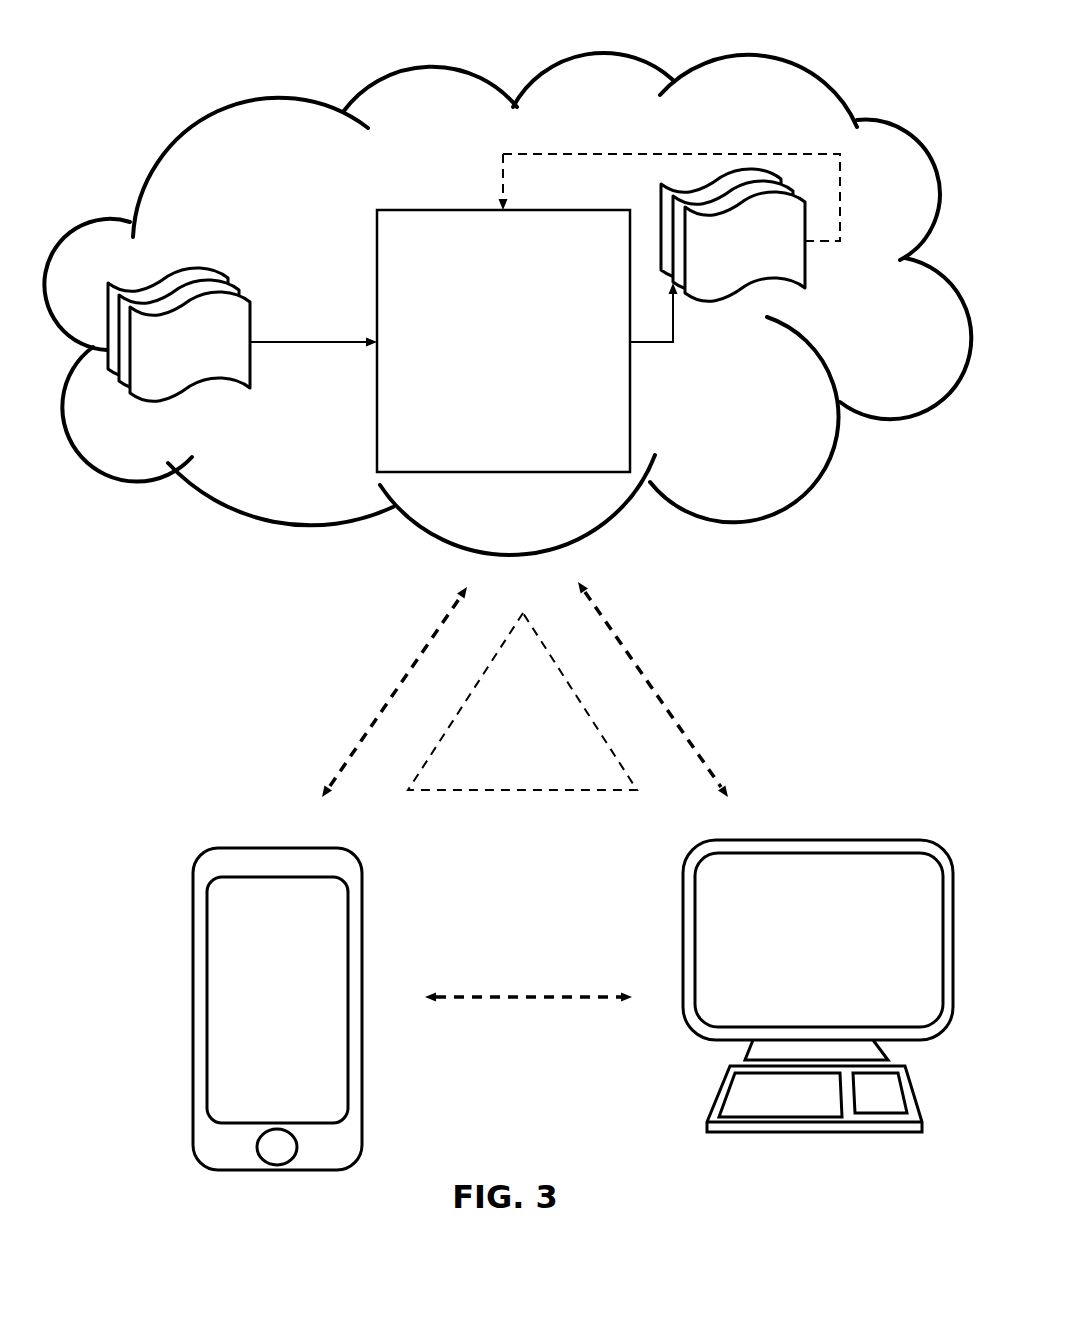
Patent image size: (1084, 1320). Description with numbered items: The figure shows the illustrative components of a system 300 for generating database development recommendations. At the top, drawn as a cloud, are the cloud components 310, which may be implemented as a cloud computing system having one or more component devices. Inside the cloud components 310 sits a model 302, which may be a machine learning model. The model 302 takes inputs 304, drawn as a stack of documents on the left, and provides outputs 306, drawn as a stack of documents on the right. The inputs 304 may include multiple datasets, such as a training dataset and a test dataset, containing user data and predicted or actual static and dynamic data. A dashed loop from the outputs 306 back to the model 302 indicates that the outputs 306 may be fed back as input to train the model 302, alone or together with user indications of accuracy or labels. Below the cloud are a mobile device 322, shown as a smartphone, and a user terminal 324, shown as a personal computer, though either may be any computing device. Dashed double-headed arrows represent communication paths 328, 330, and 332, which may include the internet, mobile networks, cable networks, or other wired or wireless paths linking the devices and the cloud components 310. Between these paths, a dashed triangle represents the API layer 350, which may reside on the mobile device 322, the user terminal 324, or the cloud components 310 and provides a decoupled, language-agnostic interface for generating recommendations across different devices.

The system 300 is at (482, 49).
The model 302 is at (485, 356).
The inputs 304 is at (196, 283).
The outputs 306 is at (787, 272).
The cloud components 310 is at (803, 110).
The mobile device 322 is at (266, 820).
The user terminal 324 is at (814, 826).
The communication path 328 is at (349, 670).
The communication path 330 is at (734, 638).
The communication path 332 is at (519, 963).
The API layer 350 is at (507, 727).